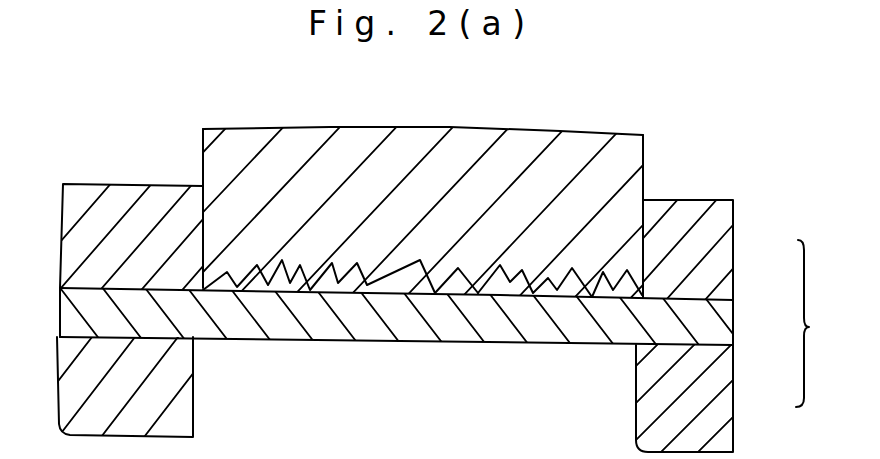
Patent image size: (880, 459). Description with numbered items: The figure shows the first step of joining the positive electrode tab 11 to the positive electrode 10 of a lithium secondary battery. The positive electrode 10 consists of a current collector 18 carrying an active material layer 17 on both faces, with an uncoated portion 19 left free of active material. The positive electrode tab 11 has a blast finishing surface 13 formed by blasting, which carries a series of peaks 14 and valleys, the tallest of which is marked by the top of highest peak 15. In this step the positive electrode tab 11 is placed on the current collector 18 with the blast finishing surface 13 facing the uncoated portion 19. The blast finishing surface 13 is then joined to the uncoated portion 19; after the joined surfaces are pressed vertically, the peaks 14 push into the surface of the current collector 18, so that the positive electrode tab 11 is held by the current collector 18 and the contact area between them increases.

The positive electrode 10 is at (819, 323).
The positive electrode tab 11 is at (625, 148).
The blast finishing surface 13 is at (452, 292).
The peak 14 is at (461, 127).
The top of highest peak 15 is at (313, 299).
The active material layer 17 is at (83, 225).
The current collector 18 is at (708, 315).
The uncoated portion 19 is at (238, 295).